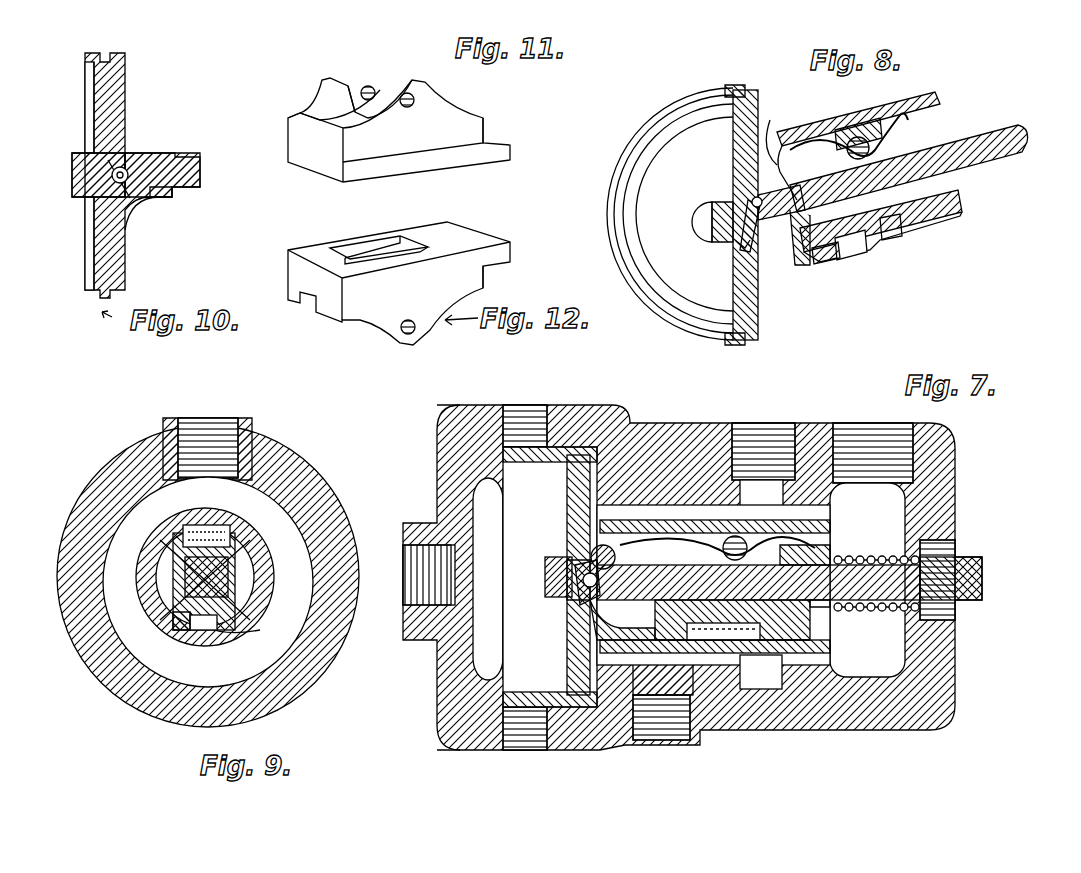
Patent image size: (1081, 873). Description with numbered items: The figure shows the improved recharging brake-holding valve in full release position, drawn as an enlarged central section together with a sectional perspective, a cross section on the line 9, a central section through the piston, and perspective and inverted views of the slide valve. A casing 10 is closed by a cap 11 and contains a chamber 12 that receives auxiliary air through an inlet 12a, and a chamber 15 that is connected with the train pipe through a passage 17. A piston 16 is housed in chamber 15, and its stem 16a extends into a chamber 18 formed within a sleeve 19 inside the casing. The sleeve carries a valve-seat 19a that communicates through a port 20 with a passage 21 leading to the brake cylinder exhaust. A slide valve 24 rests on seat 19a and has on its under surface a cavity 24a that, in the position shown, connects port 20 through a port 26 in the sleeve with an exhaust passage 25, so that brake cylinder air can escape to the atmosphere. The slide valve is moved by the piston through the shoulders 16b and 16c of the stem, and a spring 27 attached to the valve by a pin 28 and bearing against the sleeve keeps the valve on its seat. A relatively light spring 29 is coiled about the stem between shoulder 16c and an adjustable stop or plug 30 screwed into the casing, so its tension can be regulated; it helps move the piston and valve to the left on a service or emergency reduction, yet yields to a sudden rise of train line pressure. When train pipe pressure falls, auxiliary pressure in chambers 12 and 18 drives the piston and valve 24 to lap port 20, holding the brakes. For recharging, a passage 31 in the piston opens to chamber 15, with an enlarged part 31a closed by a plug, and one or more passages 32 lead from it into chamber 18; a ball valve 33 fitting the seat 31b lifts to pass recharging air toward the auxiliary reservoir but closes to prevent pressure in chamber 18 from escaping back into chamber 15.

In FIG. 7, the section line 9 is at (760, 520).
In FIG. 9, the casing 10 is at (340, 510).
In FIG. 7, the casing 10 is at (520, 520).
In FIG. 7, the cap 11 is at (478, 748).
In FIG. 7, the chamber 12 is at (867, 580).
In FIG. 7, the inlet 12a is at (858, 423).
In FIG. 7, the chamber 15 is at (550, 577).
In FIG. 10, the piston 16 is at (118, 232).
In FIG. 8, the piston 16 is at (682, 215).
In FIG. 7, the piston 16 is at (570, 655).
In FIG. 10, the stem 16a is at (200, 172).
In FIG. 8, the stem 16a is at (800, 262).
In FIG. 7, the stem 16a is at (830, 540).
In FIG. 10, the shoulder 16b is at (175, 196).
In FIG. 8, the shoulder 16b is at (800, 168).
In FIG. 7, the shoulder 16b is at (645, 608).
In FIG. 8, the shoulder 16c is at (935, 140).
In FIG. 7, the shoulder 16c is at (845, 603).
In FIG. 7, the passage 17 is at (405, 596).
In FIG. 9, the chamber 18 is at (245, 568).
In FIG. 7, the chamber 18 is at (648, 562).
In FIG. 8, the sleeve 19 is at (797, 128).
In FIG. 9, the sleeve 19 is at (160, 535).
In FIG. 7, the sleeve 19 is at (632, 520).
In FIG. 9, the valve-seat 19a is at (240, 610).
In FIG. 7, the valve-seat 19a is at (900, 740).
In FIG. 8, the port 20 is at (880, 242).
In FIG. 9, the port 20 is at (210, 632).
In FIG. 7, the port 20 is at (770, 670).
In FIG. 9, the passage 21 is at (236, 530).
In FIG. 7, the passage 21 is at (820, 690).
In FIG. 11, the slide valve 24 is at (432, 160).
In FIG. 12, the slide valve 24 is at (437, 230).
In FIG. 8, the slide valve 24 is at (960, 196).
In FIG. 9, the slide valve 24 is at (170, 602).
In FIG. 7, the slide valve 24 is at (810, 625).
In FIG. 12, the cavity 24a is at (355, 252).
In FIG. 8, the cavity 24a is at (900, 238).
In FIG. 9, the cavity 24a is at (185, 632).
In FIG. 7, the cavity 24a is at (715, 700).
In FIG. 7, the exhaust passage 25 is at (655, 698).
In FIG. 8, the port 26 is at (835, 262).
In FIG. 7, the port 26 is at (693, 660).
In FIG. 8, the spring 27 is at (905, 110).
In FIG. 7, the spring 27 is at (765, 520).
In FIG. 8, the pin 28 is at (860, 125).
In FIG. 7, the pin 28 is at (763, 471).
In FIG. 7, the spring 29 is at (876, 570).
In FIG. 7, the adjustable stop or plug 30 is at (960, 560).
In FIG. 10, the passage 31 is at (98, 186).
In FIG. 8, the passage 31 is at (735, 242).
In FIG. 7, the passage 31 is at (585, 598).
In FIG. 10, the enlarged part 31a is at (160, 205).
In FIG. 7, the enlarged part 31a is at (575, 560).
In FIG. 8, the seat 31b is at (700, 218).
In FIG. 10, the passage 32 is at (128, 168).
In FIG. 8, the passage 32 is at (748, 200).
In FIG. 7, the passage 32 is at (602, 561).
In FIG. 10, the ball valve 33 is at (100, 172).
In FIG. 7, the ball valve 33 is at (582, 592).